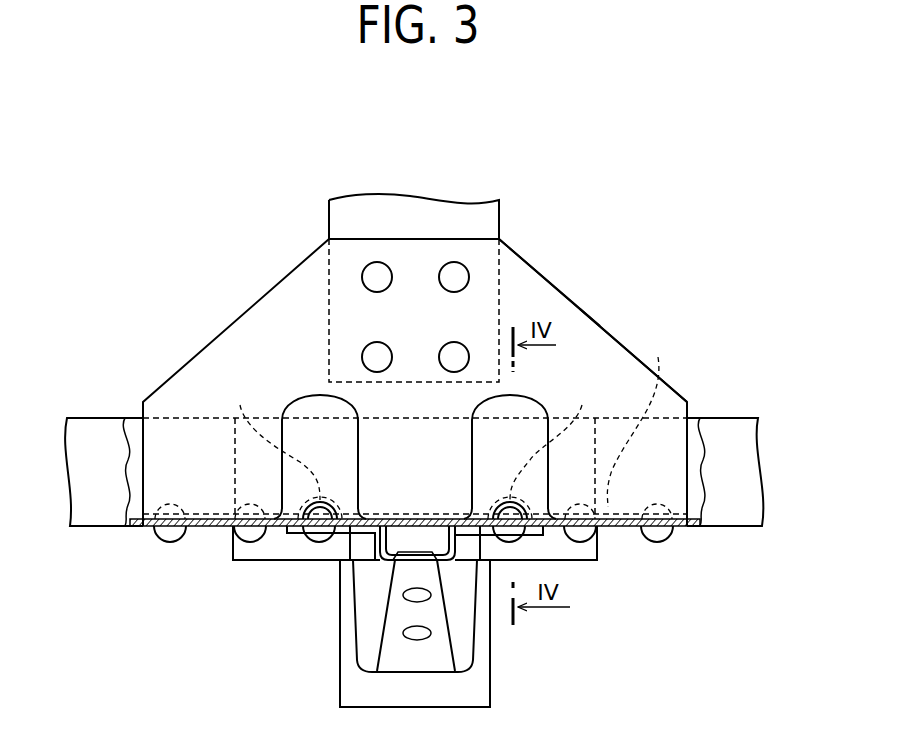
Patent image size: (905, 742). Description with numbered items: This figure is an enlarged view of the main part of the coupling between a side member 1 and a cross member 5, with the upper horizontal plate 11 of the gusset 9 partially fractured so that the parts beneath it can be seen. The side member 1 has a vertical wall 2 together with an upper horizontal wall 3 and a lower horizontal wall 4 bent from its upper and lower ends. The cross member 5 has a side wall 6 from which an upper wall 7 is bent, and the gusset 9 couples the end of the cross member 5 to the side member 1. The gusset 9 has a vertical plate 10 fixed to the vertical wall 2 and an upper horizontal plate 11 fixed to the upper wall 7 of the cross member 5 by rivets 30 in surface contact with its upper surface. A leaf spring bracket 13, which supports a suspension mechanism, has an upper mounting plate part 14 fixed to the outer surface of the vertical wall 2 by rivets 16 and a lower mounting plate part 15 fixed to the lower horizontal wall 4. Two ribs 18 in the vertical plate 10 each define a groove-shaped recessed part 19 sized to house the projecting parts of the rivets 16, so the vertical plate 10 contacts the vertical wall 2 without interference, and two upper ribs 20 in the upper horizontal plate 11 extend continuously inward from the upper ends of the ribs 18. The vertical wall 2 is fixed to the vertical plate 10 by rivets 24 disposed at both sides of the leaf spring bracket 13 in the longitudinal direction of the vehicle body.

The side member 1 is at (743, 411).
The vertical wall 2 is at (694, 528).
The upper horizontal wall 3 is at (745, 440).
The lower horizontal wall 4 is at (700, 420).
The cross member 5 is at (508, 204).
The side wall 6 is at (328, 212).
The upper wall 7 is at (375, 205).
The gusset 9 is at (575, 292).
The vertical plate 10 is at (639, 418).
The upper horizontal plate 11 is at (591, 334).
The leaf spring bracket 13 is at (502, 682).
The upper mounting plate part 14 is at (287, 535).
The lower mounting plate part 15 is at (587, 552).
The rivets 16 is at (318, 542).
The ribs 18 is at (411, 438).
The recessed part 19 is at (343, 513).
The upper ribs 20 is at (318, 397).
The rivets 24 is at (170, 535).
The rivets 30 is at (375, 355).